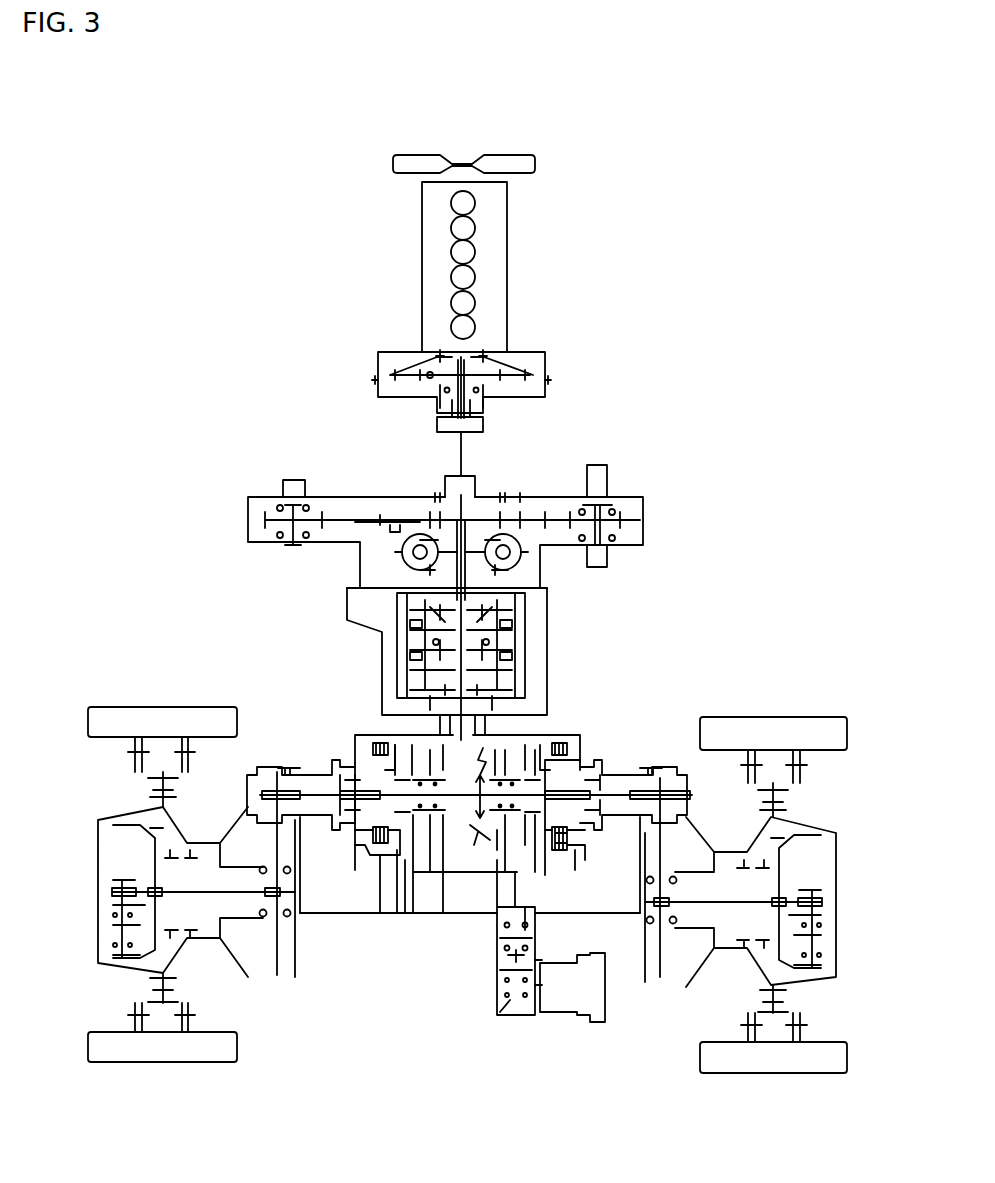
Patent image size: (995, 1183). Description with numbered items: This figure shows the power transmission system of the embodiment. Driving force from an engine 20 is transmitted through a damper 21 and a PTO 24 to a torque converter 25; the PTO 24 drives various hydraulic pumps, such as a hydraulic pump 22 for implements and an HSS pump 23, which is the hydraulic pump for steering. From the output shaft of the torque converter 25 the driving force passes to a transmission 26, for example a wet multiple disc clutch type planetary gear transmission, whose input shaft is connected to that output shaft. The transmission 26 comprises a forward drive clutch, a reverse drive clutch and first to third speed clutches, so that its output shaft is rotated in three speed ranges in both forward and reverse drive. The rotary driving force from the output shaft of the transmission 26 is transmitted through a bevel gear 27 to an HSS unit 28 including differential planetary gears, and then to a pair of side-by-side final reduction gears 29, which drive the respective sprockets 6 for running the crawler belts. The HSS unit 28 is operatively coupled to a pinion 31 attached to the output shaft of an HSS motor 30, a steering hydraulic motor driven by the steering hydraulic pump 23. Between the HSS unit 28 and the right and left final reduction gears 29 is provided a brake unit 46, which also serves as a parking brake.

The sprocket 6 is at (175, 1008).
The engine 20 is at (504, 280).
The damper 21 is at (550, 367).
The hydraulic pump for implements 22 is at (608, 554).
The HSS pump 23 is at (295, 478).
The PTO 24 is at (647, 520).
The torque converter 25 is at (526, 570).
The transmission 26 is at (541, 663).
The bevel gear 27 is at (495, 737).
The HSS unit 28 is at (532, 830).
The final reduction gears 29 is at (271, 946).
The HSS motor 30 is at (565, 993).
The pinion 31 is at (507, 1003).
The brake unit 46 is at (578, 852).